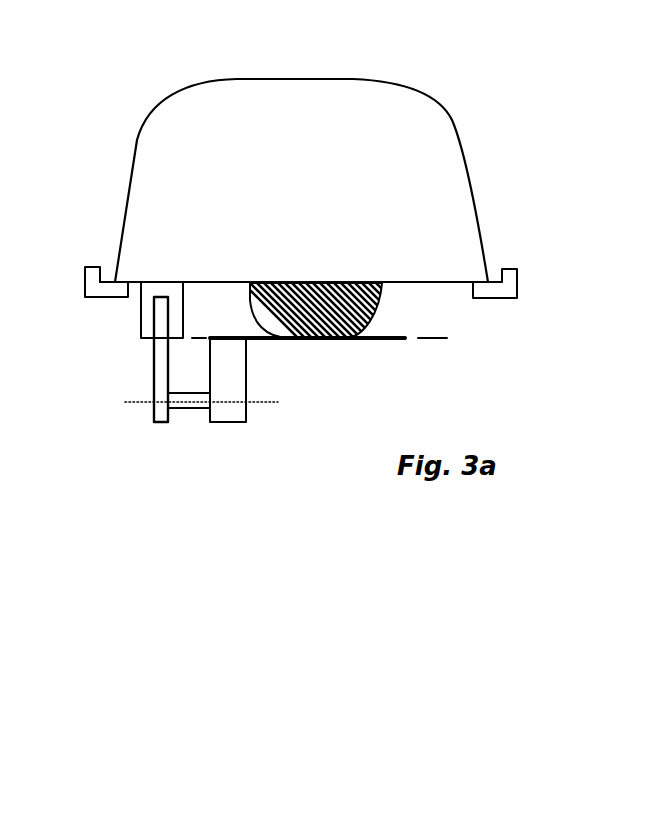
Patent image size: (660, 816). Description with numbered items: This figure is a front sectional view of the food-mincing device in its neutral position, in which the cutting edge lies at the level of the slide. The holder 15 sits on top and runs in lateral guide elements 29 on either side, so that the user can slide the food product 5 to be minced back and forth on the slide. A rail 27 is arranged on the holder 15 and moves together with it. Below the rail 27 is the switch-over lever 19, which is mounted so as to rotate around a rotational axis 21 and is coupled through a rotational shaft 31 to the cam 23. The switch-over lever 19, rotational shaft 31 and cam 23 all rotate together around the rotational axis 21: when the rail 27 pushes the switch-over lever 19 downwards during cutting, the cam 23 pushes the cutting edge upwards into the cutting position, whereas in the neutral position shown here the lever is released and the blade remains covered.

The holder 15 is at (450, 118).
The lateral guide elements 29 is at (97, 287).
The food product 5 is at (365, 316).
The rail 27 is at (148, 322).
The switch-over lever 19 is at (162, 370).
The rotational shaft 31 is at (191, 404).
The cam 23 is at (246, 378).
The rotational axis 21 is at (136, 403).